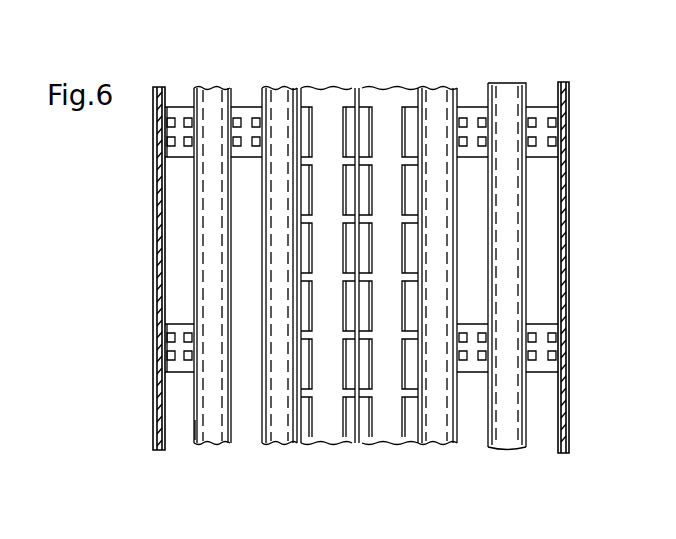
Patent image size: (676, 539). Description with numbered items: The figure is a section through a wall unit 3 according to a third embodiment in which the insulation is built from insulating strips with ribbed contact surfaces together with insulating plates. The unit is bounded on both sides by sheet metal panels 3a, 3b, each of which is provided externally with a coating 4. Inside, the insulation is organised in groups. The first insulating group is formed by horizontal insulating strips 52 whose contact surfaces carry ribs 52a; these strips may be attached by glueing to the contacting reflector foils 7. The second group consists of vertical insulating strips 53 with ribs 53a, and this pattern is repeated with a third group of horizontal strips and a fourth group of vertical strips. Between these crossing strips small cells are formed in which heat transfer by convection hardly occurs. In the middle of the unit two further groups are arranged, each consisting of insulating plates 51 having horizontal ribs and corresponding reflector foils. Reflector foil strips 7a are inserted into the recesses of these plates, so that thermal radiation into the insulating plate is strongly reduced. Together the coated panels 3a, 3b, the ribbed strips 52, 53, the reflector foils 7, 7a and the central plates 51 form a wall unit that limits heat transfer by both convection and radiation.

The wall unit 3 is at (134, 150).
The sheet metal panel 3a is at (153, 203).
The sheet metal panel 3b is at (565, 152).
The coating 4 is at (157, 270).
The reflector foil 7 is at (191, 87).
The reflector foil strip 7a is at (307, 435).
The insulating plate 51 is at (383, 427).
The horizontal insulating strip 52 is at (472, 102).
The rib 52a is at (165, 325).
The vertical insulating strip 53 is at (507, 90).
The rib 53a is at (192, 430).